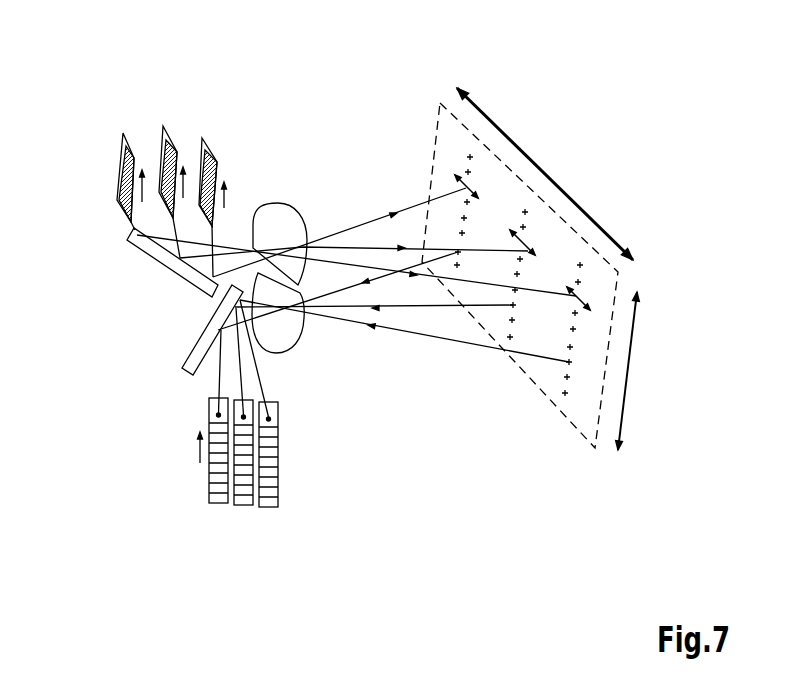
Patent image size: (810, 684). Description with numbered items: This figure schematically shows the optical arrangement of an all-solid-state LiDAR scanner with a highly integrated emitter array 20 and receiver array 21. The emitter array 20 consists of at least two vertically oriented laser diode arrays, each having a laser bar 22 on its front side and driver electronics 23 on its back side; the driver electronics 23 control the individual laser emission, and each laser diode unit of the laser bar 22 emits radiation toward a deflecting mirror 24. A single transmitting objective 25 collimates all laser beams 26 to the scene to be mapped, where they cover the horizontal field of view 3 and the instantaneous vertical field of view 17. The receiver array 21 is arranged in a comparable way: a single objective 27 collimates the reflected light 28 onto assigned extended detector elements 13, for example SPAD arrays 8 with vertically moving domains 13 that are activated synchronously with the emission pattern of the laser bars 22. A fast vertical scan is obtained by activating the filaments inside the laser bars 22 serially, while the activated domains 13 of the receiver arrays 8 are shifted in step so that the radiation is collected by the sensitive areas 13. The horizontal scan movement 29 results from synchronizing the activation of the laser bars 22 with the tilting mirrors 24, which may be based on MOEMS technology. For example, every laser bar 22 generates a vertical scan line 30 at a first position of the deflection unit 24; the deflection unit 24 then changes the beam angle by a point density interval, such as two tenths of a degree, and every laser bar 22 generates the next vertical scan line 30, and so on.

The emitter array 20 is at (141, 147).
The driver electronics 23 is at (258, 134).
The laser bar 22 is at (259, 152).
The deflecting mirror 24 is at (197, 340).
The transmitting objective 25 is at (318, 215).
The laser beams 26 is at (486, 275).
The receiver objective 27 is at (315, 340).
The reflected light 28 is at (393, 347).
The horizontal scan movement 29 is at (576, 272).
The horizontal field of view 3 is at (545, 174).
The instantaneous vertical field of view 17 is at (642, 371).
The vertical scan line 30 is at (410, 357).
The receiver array 21 is at (195, 452).
The SPAD array 8 is at (313, 476).
The detector elements 13 is at (322, 470).